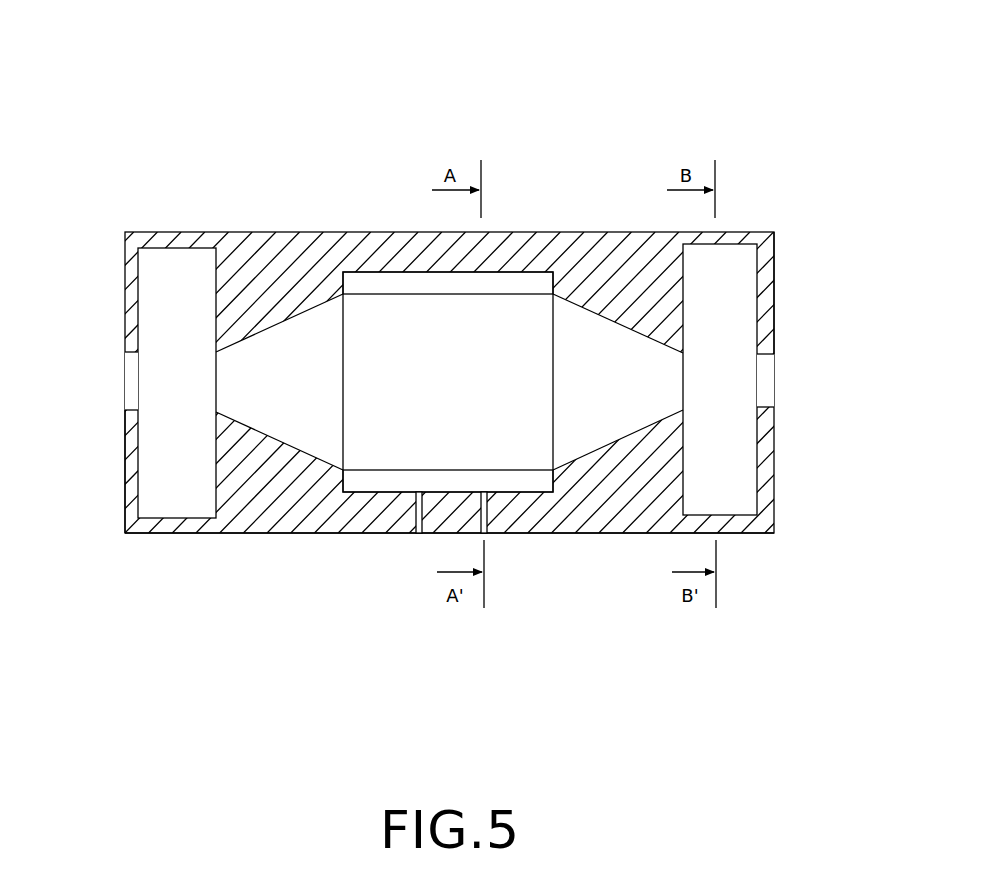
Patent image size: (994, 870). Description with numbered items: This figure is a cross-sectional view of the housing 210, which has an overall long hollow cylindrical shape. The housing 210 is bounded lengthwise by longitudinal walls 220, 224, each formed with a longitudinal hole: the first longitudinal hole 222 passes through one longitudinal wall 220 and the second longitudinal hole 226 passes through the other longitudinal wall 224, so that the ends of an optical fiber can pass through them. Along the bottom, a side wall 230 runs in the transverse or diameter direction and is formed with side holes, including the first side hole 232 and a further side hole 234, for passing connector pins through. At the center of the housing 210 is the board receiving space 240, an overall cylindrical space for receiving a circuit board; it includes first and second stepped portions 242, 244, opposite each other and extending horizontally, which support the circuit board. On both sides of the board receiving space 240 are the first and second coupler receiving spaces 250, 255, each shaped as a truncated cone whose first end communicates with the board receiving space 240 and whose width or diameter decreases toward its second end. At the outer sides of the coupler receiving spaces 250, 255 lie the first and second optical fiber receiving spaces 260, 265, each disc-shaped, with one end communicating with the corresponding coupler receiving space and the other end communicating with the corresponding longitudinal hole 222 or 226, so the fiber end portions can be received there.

The housing 210 is at (422, 42).
The longitudinal wall 220 is at (132, 497).
The first longitudinal hole 222 is at (132, 385).
The longitudinal wall 224 is at (765, 300).
The second longitudinal hole 226 is at (765, 385).
The side wall 230 is at (247, 512).
The first side hole 232 is at (417, 520).
The second terminal 234 is at (487, 521).
The board receiving space 240 is at (378, 313).
The first stepped portion 242 is at (367, 482).
The second stepped portion 244 is at (529, 277).
The first coupler receiving space 250 is at (283, 353).
The second coupler receiving space 255 is at (622, 353).
The first optical fiber receiving space 260 is at (169, 262).
The second optical fiber receiving space 265 is at (728, 258).